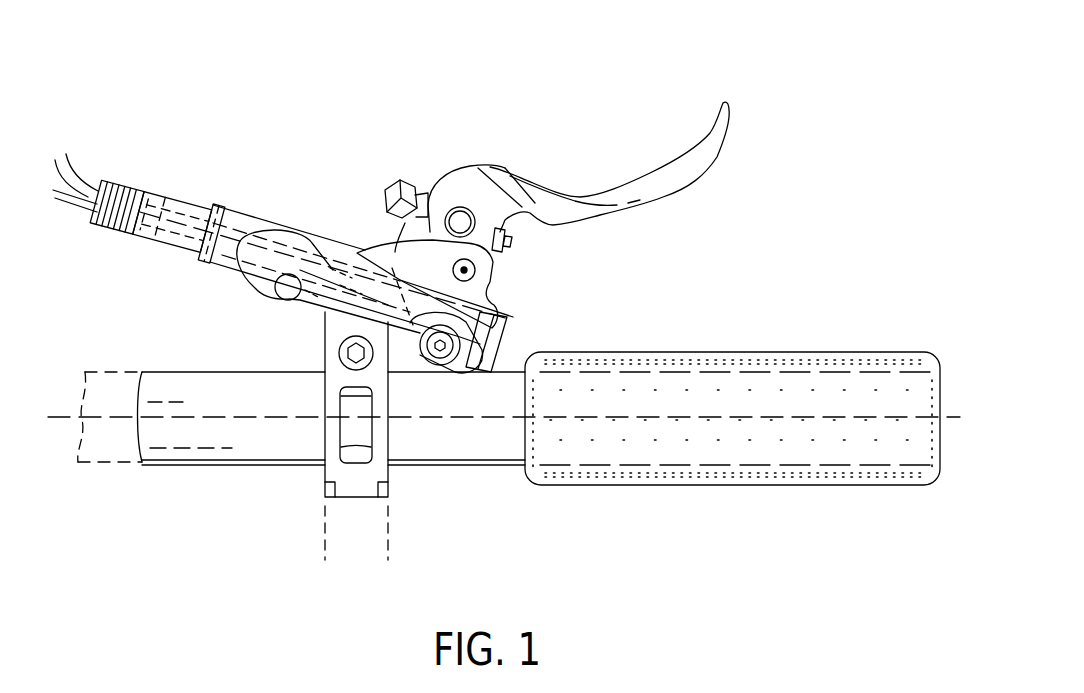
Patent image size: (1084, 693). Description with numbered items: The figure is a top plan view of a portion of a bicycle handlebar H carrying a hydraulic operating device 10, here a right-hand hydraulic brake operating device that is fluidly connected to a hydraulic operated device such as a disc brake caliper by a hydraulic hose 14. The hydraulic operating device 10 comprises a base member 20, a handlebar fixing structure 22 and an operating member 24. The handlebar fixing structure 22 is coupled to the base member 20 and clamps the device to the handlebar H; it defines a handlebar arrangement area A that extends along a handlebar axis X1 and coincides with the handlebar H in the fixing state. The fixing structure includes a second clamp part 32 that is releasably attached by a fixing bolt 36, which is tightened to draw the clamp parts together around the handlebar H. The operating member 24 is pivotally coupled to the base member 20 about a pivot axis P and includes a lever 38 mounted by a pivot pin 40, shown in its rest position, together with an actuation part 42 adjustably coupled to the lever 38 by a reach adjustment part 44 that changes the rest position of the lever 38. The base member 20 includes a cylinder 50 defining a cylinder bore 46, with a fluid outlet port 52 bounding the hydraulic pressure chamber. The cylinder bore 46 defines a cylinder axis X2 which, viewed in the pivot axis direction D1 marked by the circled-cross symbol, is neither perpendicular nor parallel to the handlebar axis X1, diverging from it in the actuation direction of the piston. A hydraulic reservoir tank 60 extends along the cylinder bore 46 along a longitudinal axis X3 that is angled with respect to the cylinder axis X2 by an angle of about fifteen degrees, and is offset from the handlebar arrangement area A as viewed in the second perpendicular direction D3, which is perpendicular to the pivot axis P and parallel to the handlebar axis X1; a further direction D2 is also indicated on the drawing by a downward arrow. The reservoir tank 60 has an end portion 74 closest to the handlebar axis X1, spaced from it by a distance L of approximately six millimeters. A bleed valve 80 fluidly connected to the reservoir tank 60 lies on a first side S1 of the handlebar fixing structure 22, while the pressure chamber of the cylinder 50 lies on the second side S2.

The hydraulic operating device 10 is at (211, 100).
The hydraulic hose 14 is at (88, 188).
The base member 20 is at (510, 290).
The handlebar fixing structure 22 is at (322, 488).
The operating member 24 is at (456, 162).
The second clamp part 32 is at (338, 437).
The fixing bolt 36 is at (338, 348).
The lever 38 is at (662, 168).
The pivot pin 40 is at (482, 274).
The actuation part 42 is at (522, 313).
The reach adjustment part 44 is at (386, 186).
The cylinder bore 46 is at (220, 214).
The cylinder 50 is at (268, 216).
The fluid outlet port 52 is at (210, 250).
The hydraulic reservoir tank 60 is at (319, 250).
The end portion 74 is at (500, 380).
The bleed valve 80 is at (430, 368).
The handlebar axis X1 is at (62, 415).
The cylinder axis X2 is at (187, 222).
The longitudinal axis X3 is at (168, 242).
The pivot axis P is at (475, 267).
The distance L is at (482, 378).
The handlebar arrangement area A is at (102, 466).
The handlebar H is at (180, 466).
The pivot axis direction D1 is at (375, 103).
The second direction D2 is at (322, 165).
The second perpendicular direction D3 is at (740, 323).
The first side S1 is at (428, 551).
The second side S2 is at (325, 551).